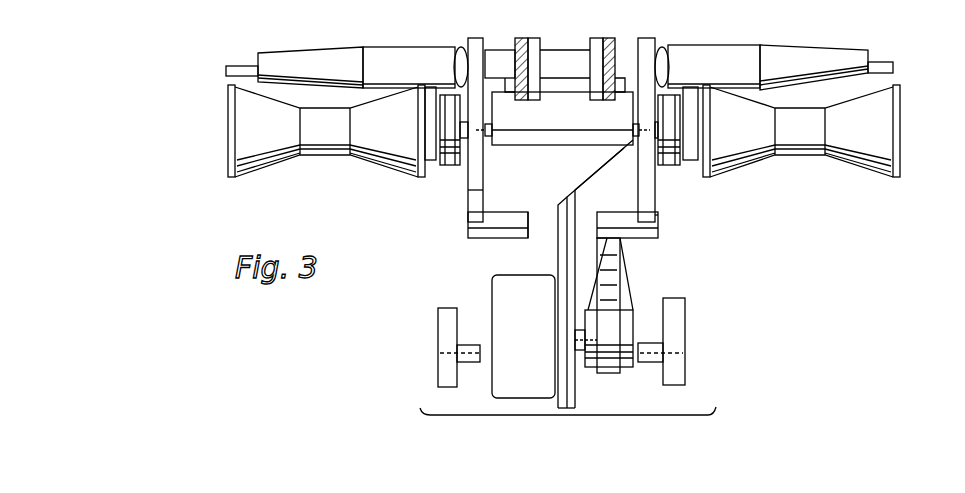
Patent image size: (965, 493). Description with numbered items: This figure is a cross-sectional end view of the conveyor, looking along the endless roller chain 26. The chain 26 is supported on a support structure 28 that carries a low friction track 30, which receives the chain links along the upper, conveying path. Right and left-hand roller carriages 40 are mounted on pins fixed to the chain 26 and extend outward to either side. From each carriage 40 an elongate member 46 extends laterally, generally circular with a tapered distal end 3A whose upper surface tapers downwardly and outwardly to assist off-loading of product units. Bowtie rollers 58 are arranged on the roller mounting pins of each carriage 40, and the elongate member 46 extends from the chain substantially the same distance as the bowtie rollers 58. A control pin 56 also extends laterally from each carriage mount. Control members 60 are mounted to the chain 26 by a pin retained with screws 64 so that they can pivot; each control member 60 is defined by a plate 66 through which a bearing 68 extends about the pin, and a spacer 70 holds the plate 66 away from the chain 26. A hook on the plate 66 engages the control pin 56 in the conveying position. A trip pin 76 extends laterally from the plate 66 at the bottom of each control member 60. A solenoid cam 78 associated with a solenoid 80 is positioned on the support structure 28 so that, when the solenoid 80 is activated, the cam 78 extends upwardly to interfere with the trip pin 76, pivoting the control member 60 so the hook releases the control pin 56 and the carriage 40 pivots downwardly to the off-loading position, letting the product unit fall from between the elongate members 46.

The shaft 3A is at (880, 60).
The elongate member 46 is at (378, 47).
The screws 64 is at (452, 62).
The bearing 68 is at (478, 38).
The spacer 70 is at (500, 50).
The endless roller chain 26 is at (528, 38).
The low friction track 30 is at (572, 128).
The control pin 56 is at (493, 131).
The support structure 28 is at (558, 192).
The control members 60 is at (466, 208).
The plate 66 is at (483, 190).
The trip pin 76 is at (508, 240).
The solenoid cam 78 is at (618, 252).
The solenoid 80 is at (490, 380).
The roller carriages 40 is at (447, 167).
The bowtie roller 58 is at (228, 104).